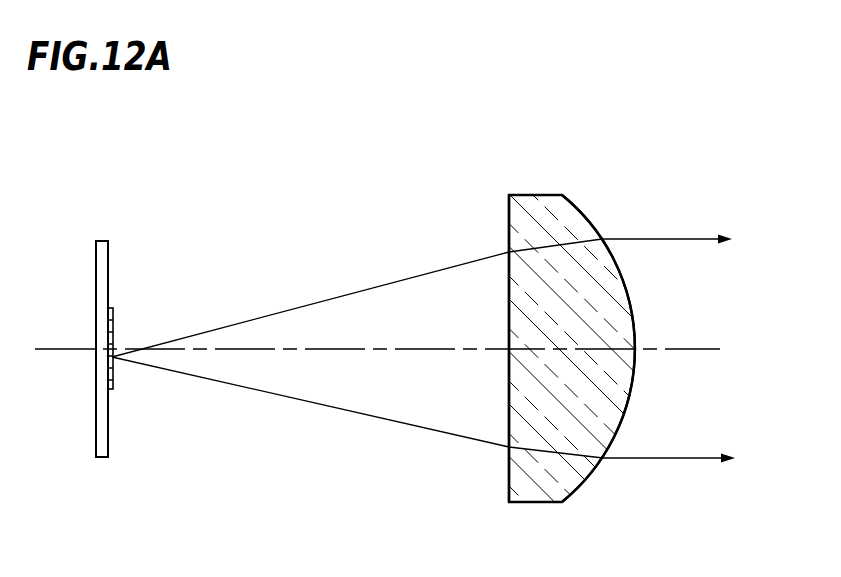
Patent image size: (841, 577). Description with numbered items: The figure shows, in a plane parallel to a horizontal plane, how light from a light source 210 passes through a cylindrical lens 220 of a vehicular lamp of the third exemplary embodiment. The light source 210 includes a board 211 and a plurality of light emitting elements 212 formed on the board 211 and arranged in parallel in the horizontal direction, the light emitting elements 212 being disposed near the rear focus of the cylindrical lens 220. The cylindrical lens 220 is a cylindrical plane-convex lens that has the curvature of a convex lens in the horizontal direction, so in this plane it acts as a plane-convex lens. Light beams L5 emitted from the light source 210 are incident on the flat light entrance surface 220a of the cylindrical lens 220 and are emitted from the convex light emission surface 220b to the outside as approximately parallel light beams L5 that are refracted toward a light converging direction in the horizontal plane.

The light source 210 is at (121, 241).
The board 211 is at (109, 433).
The light emitting elements 212 is at (113, 308).
The cylindrical lens 220 is at (497, 211).
The light entrance surface 220a is at (509, 467).
The light emission surface 220b is at (581, 487).
The light beams L5 is at (677, 238).